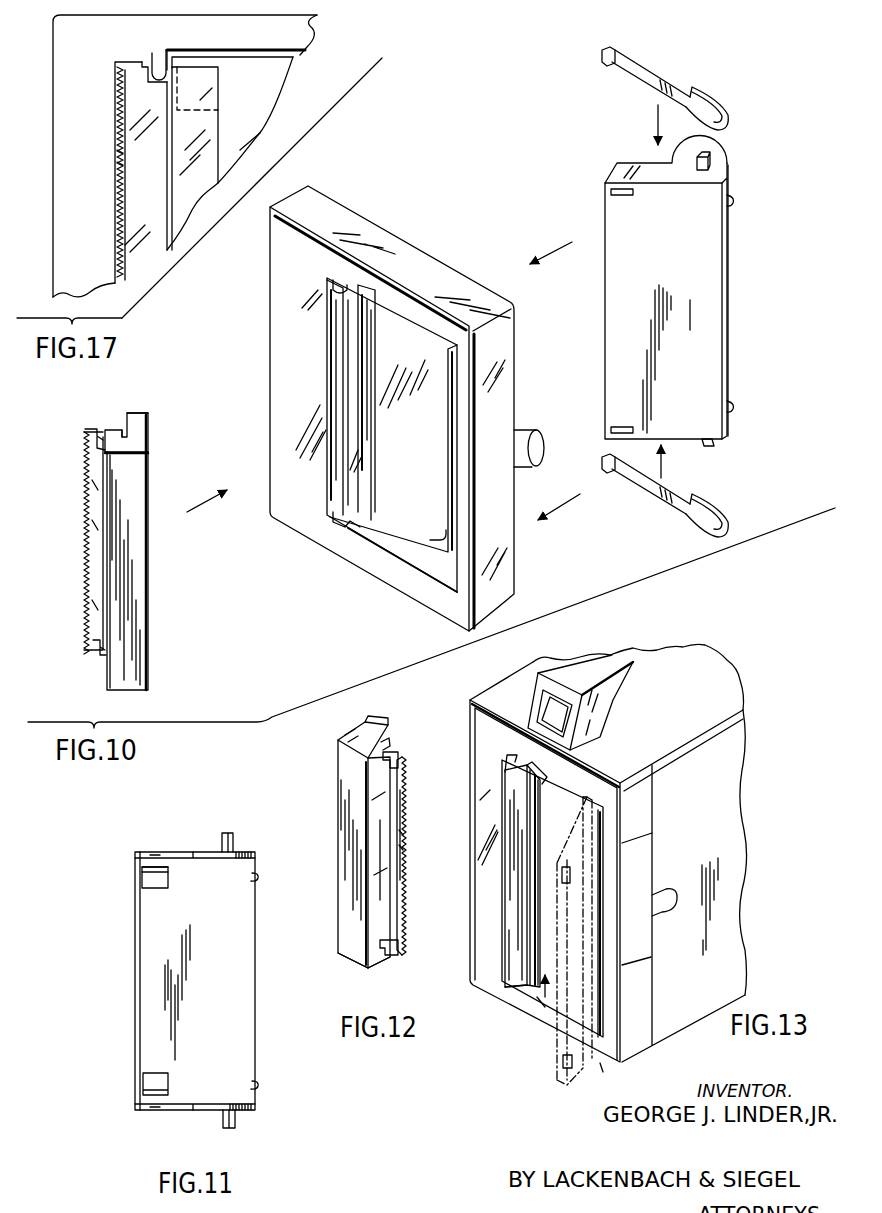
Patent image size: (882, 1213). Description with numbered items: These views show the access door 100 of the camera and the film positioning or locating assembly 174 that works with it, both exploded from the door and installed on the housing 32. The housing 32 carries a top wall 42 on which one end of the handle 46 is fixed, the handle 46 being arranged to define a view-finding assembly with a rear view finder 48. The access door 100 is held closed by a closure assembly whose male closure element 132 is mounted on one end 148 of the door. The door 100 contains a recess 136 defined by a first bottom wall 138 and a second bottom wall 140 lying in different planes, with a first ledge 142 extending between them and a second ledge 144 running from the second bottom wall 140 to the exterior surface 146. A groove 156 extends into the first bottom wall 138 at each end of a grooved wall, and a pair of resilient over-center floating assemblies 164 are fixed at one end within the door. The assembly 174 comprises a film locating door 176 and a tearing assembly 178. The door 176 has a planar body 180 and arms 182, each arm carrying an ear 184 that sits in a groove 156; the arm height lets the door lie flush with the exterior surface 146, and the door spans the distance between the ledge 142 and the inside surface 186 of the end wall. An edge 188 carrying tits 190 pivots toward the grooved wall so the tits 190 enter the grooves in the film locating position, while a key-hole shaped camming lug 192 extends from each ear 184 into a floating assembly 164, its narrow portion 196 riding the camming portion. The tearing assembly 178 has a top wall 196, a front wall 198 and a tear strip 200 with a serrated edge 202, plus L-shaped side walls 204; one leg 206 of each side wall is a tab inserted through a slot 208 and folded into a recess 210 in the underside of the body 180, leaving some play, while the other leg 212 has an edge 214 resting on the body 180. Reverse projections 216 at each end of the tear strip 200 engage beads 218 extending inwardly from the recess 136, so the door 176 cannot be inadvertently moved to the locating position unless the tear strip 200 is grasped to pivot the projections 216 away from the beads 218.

In FIG. 13, the housing 32 is at (733, 998).
In FIG. 13, the top wall 42 is at (723, 708).
In FIG. 13, the handle 46 is at (593, 678).
In FIG. 13, the rear view finder 48 is at (557, 703).
In FIG. 10, the access door 100 is at (268, 394).
In FIG. 10, the male closure element 132 is at (533, 458).
In FIG. 13, the male closure element 132 is at (668, 887).
In FIG. 17, the recess 136 is at (305, 57).
In FIG. 10, the recess 136 is at (393, 564).
In FIG. 10, the first bottom wall 138 is at (421, 470).
In FIG. 10, the second bottom wall 140 is at (354, 497).
In FIG. 10, the first ledge 142 is at (369, 348).
In FIG. 17, the second ledge 144 is at (115, 213).
In FIG. 10, the second ledge 144 is at (334, 386).
In FIG. 10, the exterior surface 146 is at (291, 516).
In FIG. 10, the end of the access door 148 is at (507, 586).
In FIG. 13, the end of the access door 148 is at (642, 1017).
In FIG. 10, the groove 156 is at (441, 541).
In FIG. 10, the resilient over-center floating assembly 164 is at (645, 88).
In FIG. 17, the film positioning or locating assembly 174 is at (255, 100).
In FIG. 13, the film positioning or locating assembly 174 is at (543, 1003).
In FIG. 10, the film locating or positioning door 176 is at (699, 339).
In FIG. 11, the film locating or positioning door 176 is at (195, 981).
In FIG. 10, the tearing assembly 178 is at (140, 620).
In FIG. 12, the tearing assembly 178 is at (352, 930).
In FIG. 13, the tearing assembly 178 is at (518, 958).
In FIG. 10, the planar body 180 is at (680, 258).
In FIG. 13, the planar body 180 is at (575, 811).
In FIG. 10, the arm 182 is at (617, 167).
In FIG. 11, the arm 182 is at (160, 853).
In FIG. 13, the arm 182 is at (587, 833).
In FIG. 10, the ear 184 is at (722, 159).
In FIG. 11, the ear 184 is at (253, 853).
In FIG. 10, the inside surface 186 is at (451, 382).
In FIG. 10, the edge 188 is at (727, 258).
In FIG. 10, the tit 190 is at (731, 200).
In FIG. 11, the tit 190 is at (259, 877).
In FIG. 10, the camming lug 192 is at (672, 158).
In FIG. 11, the camming lug 192 is at (225, 833).
In FIG. 17, the top wall 196 is at (207, 138).
In FIG. 10, the top wall 196 is at (143, 525).
In FIG. 12, the top wall 196 is at (357, 955).
In FIG. 13, the top wall 196 is at (520, 987).
In FIG. 12, the front wall 198 is at (385, 957).
In FIG. 17, the tear strip 200 is at (137, 107).
In FIG. 10, the tear strip 200 is at (90, 550).
In FIG. 12, the tear strip 200 is at (400, 762).
In FIG. 17, the serrated edge 202 is at (118, 167).
In FIG. 10, the serrated edge 202 is at (90, 588).
In FIG. 12, the serrated edge 202 is at (408, 835).
In FIG. 10, the side wall 204 is at (152, 450).
In FIG. 12, the side wall 204 is at (345, 733).
In FIG. 13, the side wall 204 is at (540, 1007).
In FIG. 10, the leg or tab 206 is at (137, 434).
In FIG. 12, the leg or tab 206 is at (377, 722).
In FIG. 10, the slot 208 is at (607, 193).
In FIG. 11, the slot 208 is at (168, 868).
In FIG. 11, the recess 210 is at (155, 888).
In FIG. 12, the leg 212 is at (338, 752).
In FIG. 13, the leg 212 is at (510, 762).
In FIG. 12, the edge 214 is at (392, 740).
In FIG. 17, the reverse projection 216 is at (148, 62).
In FIG. 10, the reverse projection 216 is at (95, 443).
In FIG. 12, the reverse projection 216 is at (398, 760).
In FIG. 13, the reverse projection 216 is at (588, 1072).
In FIG. 17, the bead 218 is at (160, 58).
In FIG. 10, the bead 218 is at (333, 290).